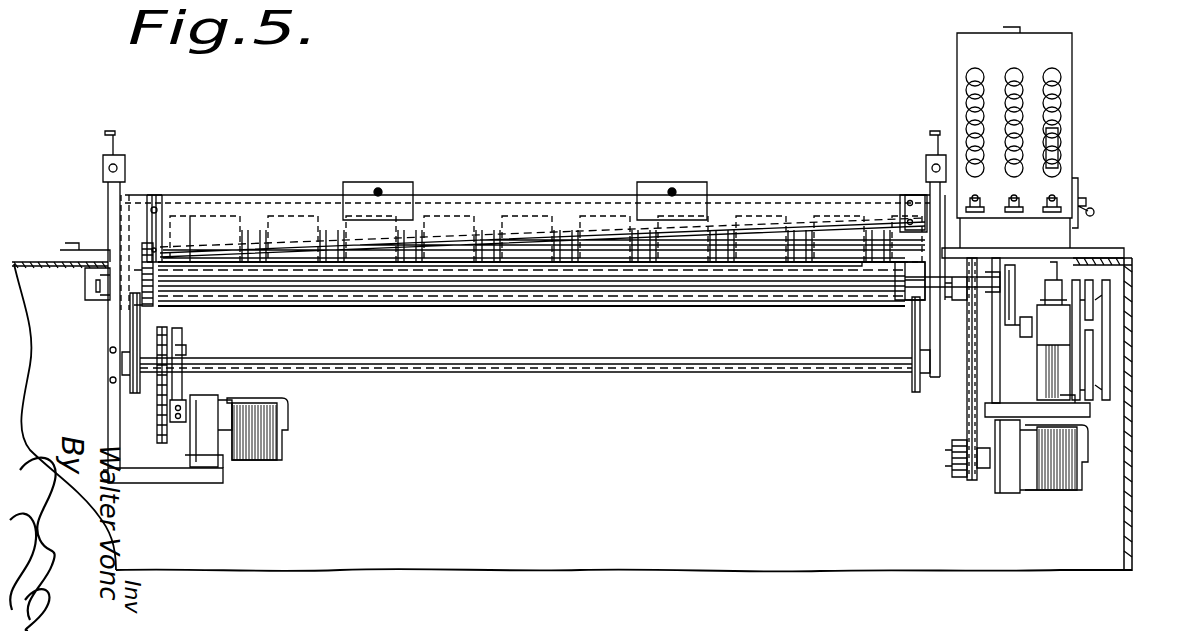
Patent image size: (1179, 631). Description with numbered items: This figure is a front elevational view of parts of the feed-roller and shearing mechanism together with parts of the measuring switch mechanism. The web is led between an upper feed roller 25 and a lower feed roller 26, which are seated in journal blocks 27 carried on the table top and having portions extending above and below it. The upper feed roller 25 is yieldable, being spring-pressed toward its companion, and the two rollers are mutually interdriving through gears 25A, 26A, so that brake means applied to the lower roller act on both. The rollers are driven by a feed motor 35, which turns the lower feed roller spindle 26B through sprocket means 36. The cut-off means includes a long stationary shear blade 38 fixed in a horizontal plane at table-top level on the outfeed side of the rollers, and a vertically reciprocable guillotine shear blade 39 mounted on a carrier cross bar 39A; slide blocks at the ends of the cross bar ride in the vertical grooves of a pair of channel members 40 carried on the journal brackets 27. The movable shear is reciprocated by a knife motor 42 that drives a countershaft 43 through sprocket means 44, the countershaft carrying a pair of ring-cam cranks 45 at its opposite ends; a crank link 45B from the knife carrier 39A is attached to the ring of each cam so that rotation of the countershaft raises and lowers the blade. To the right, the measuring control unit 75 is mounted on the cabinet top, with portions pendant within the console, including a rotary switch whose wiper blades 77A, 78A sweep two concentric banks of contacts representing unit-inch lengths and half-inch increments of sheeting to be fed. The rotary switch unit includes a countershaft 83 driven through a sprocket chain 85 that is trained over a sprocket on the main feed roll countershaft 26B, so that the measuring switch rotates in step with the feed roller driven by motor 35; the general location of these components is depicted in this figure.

The upper feed roller 25 is at (238, 220).
The gear 25A is at (146, 242).
The lower feed roller 26 is at (322, 300).
The gear 26A is at (143, 292).
The lower feed roller spindle 26B is at (990, 285).
The journal blocks 27 is at (135, 184).
The feed motor 35 is at (1030, 480).
The sprocket means 36 is at (980, 275).
The stationary shear blade 38 is at (862, 268).
The guillotine shear blade 39 is at (520, 225).
The carrier cross bar 39A is at (534, 252).
The channel members 40 is at (906, 200).
The knife motor 42 is at (282, 450).
The countershaft 43 is at (372, 373).
The sprocket means 44 is at (153, 412).
The ring-cam cranks 45 is at (150, 334).
The crank link 45B is at (905, 283).
The measuring control unit 75 is at (1083, 177).
The rotary wiper blade 77A is at (1090, 270).
The rotary wiper blade 78A is at (1100, 296).
The countershaft 83 is at (1016, 318).
The sprocket chain 85 is at (1016, 345).